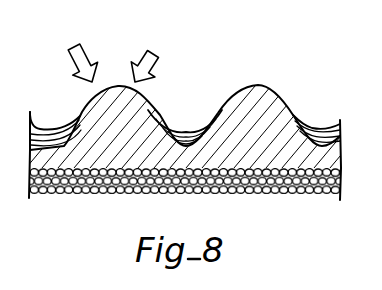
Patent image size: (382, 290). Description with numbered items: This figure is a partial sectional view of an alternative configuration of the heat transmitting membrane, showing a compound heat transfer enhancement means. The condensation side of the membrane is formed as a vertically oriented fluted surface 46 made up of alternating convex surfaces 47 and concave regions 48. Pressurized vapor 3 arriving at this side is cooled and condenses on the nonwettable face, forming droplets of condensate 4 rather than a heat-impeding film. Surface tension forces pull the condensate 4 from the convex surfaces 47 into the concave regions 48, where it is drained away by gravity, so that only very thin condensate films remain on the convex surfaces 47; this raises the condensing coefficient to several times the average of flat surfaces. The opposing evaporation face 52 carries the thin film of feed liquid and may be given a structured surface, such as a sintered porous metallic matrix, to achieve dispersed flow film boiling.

The pressurized vapor 3 is at (142, 58).
The condensate 4 is at (185, 136).
The fluted surface 46 is at (294, 117).
The convex surfaces 47 is at (271, 90).
The concave regions 48 is at (318, 133).
The evaporation face 52 is at (228, 188).